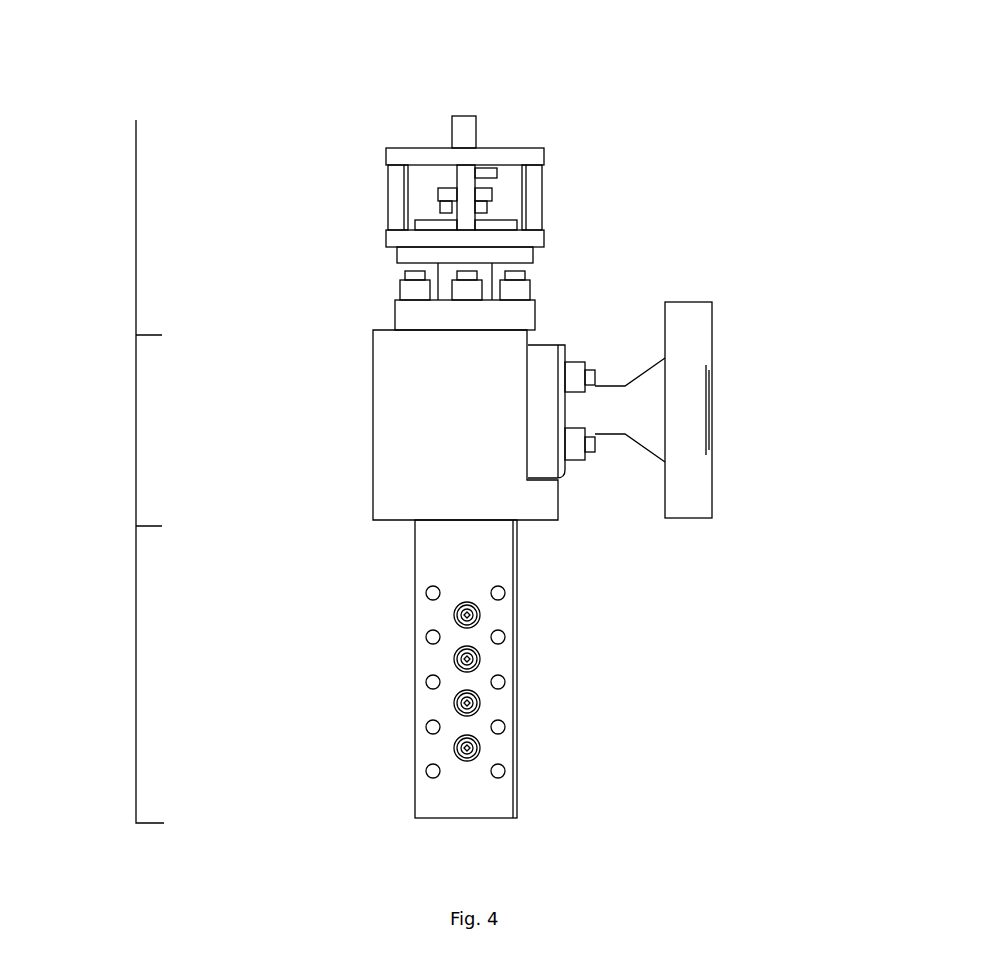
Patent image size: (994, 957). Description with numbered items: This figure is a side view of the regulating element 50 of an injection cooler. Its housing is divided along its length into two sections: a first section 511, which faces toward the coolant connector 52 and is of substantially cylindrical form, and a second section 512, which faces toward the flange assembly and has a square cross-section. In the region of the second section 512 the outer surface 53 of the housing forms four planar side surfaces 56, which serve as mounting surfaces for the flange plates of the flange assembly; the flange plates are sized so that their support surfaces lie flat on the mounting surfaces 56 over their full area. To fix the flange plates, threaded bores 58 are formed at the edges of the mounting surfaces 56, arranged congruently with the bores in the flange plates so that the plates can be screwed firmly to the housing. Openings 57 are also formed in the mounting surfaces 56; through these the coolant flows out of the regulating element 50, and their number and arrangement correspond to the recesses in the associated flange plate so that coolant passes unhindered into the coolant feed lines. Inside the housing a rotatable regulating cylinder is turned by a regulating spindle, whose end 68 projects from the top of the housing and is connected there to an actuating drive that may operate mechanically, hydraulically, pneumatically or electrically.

The regulating element 50 is at (623, 67).
The coolant connector 52 is at (687, 477).
The outer surface 53 is at (414, 367).
The side surfaces 56 is at (520, 683).
The openings 57 is at (480, 617).
The threaded bores 58 is at (425, 635).
The end of the regulating spindle 68 is at (460, 127).
The first section 511 is at (135, 427).
The second section 512 is at (135, 670).